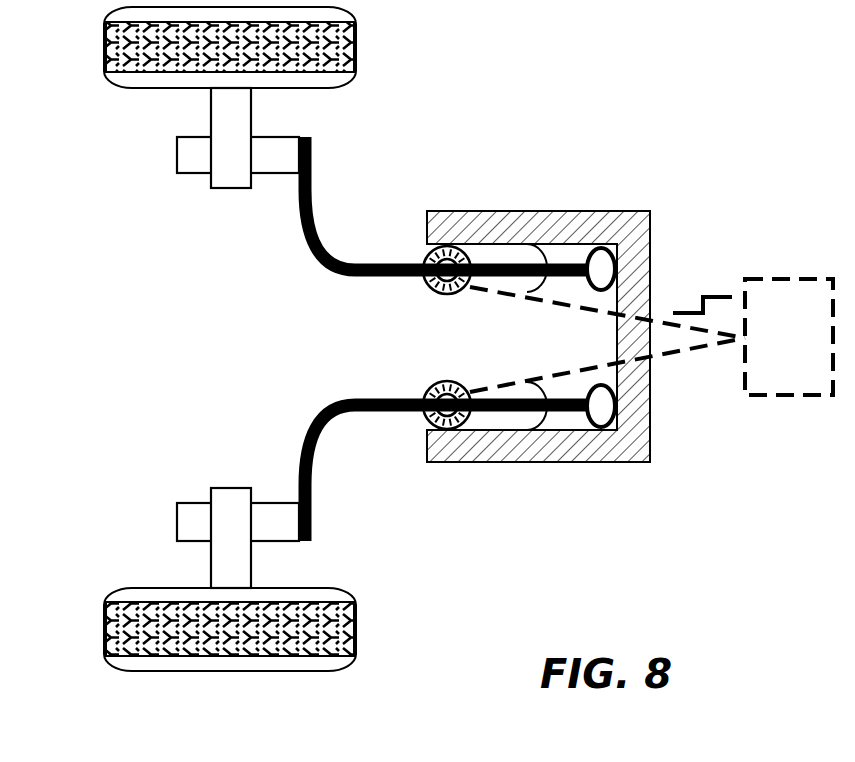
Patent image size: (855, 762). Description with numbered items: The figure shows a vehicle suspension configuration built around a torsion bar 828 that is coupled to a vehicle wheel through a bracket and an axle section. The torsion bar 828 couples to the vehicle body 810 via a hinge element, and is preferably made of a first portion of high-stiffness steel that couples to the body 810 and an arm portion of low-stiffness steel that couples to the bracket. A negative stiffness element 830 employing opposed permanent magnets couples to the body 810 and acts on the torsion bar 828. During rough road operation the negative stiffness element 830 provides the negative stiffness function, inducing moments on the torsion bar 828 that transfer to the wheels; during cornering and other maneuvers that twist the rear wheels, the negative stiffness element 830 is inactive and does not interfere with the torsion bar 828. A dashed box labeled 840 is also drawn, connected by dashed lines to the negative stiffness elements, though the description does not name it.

The vehicle body 810 is at (540, 230).
The torsion bar 828 is at (347, 400).
The negative stiffness element 830 is at (473, 380).
The controller 840 is at (651, 337).